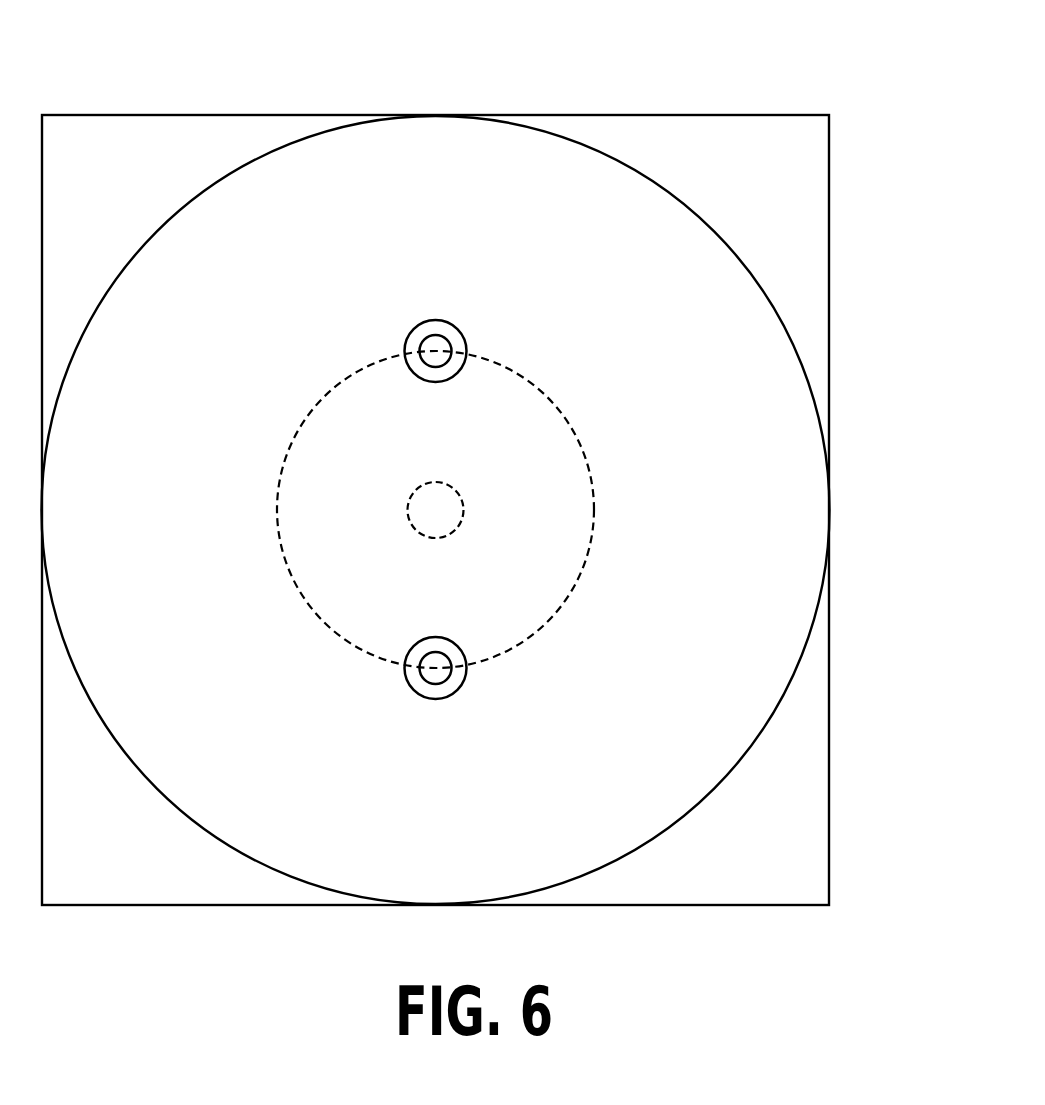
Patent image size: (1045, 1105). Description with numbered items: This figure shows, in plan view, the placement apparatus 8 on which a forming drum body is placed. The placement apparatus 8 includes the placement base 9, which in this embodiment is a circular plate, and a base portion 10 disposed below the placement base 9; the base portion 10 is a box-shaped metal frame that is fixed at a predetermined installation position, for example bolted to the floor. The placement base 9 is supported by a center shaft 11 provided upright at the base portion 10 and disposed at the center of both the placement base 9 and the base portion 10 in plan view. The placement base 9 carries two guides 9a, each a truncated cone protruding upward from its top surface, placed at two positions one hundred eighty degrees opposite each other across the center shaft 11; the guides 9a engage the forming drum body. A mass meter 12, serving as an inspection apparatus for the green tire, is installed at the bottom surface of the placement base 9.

The placement apparatus 8 is at (478, 459).
The placement base 9 is at (580, 163).
The guide 9a is at (458, 347).
The base portion 10 is at (818, 256).
The center shaft 11 is at (452, 498).
The mass meter 12 is at (320, 425).